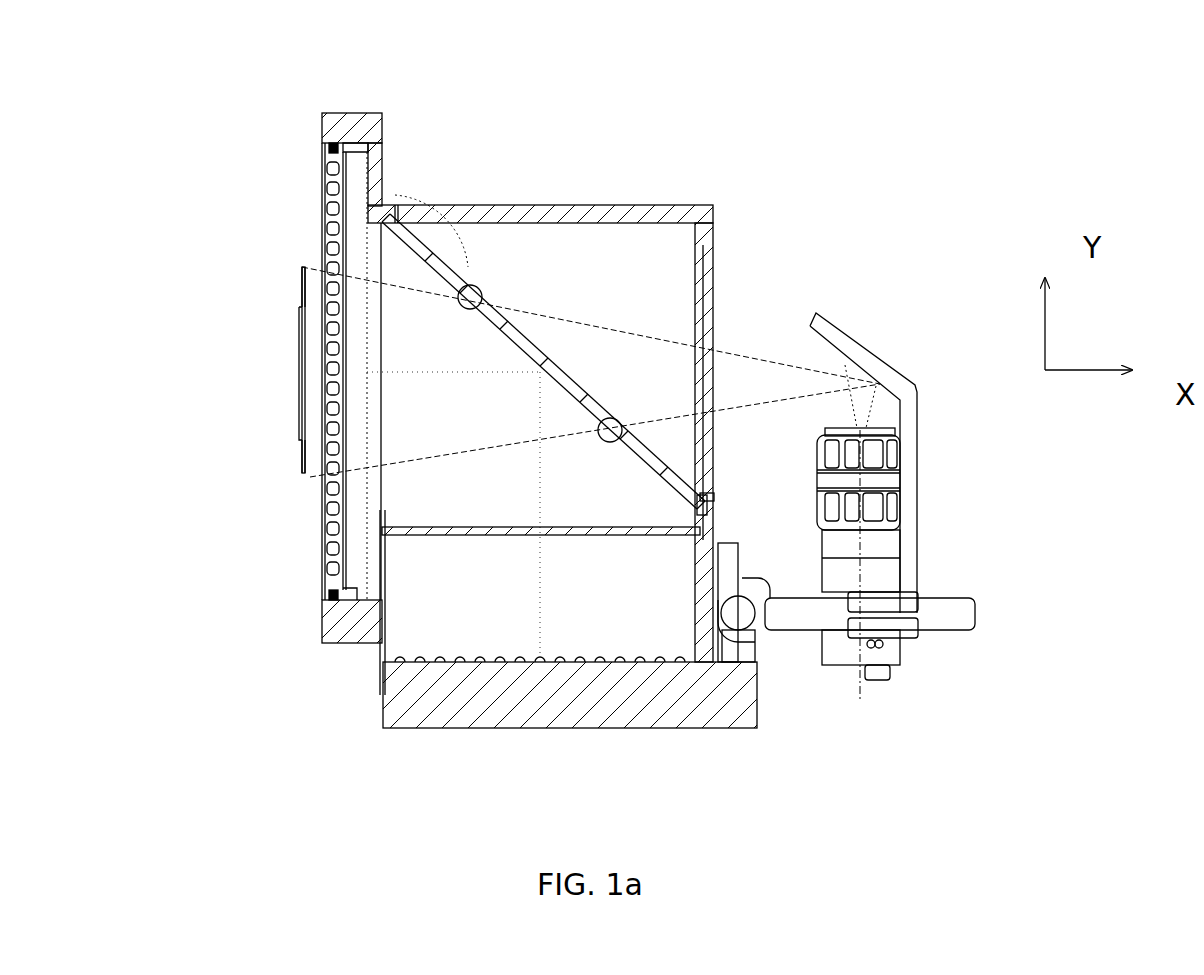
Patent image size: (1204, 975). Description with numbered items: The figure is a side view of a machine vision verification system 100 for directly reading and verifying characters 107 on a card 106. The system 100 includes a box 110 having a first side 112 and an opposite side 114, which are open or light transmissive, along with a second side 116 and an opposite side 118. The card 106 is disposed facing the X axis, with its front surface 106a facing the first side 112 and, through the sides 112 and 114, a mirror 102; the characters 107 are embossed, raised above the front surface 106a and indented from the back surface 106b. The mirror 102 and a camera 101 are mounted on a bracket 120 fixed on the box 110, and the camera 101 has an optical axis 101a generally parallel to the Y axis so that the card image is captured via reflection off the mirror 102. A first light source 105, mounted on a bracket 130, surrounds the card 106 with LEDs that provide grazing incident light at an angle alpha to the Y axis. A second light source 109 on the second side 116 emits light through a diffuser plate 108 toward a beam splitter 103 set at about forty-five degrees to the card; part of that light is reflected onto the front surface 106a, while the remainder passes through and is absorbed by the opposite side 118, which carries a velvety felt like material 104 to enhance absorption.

The system 100 is at (1000, 145).
The camera 101 is at (846, 670).
The optical axis 101a is at (862, 688).
The mirror 102 is at (859, 359).
The beam splitter 103 is at (572, 371).
The velvety felt like material 104 is at (606, 217).
The first light source 105 is at (318, 160).
The card 106 is at (296, 372).
The front surface 106a is at (296, 410).
The back surface 106b is at (296, 332).
The characters 107 is at (296, 432).
The diffuser plate 108 is at (476, 539).
The second light source 109 is at (537, 667).
The box 110 is at (732, 187).
The first side 112 is at (276, 260).
The opposite side 114 is at (724, 300).
The second side 116 is at (607, 747).
The opposite side 118 is at (493, 202).
The bracket 120 is at (922, 553).
The bracket 130 is at (358, 108).